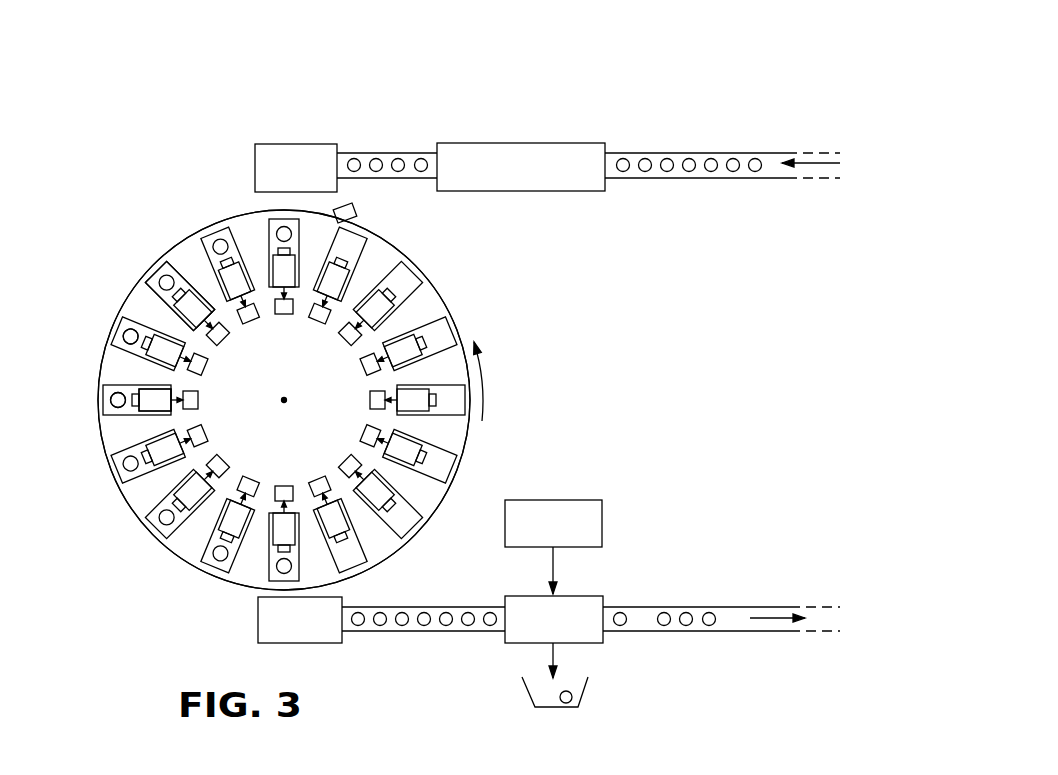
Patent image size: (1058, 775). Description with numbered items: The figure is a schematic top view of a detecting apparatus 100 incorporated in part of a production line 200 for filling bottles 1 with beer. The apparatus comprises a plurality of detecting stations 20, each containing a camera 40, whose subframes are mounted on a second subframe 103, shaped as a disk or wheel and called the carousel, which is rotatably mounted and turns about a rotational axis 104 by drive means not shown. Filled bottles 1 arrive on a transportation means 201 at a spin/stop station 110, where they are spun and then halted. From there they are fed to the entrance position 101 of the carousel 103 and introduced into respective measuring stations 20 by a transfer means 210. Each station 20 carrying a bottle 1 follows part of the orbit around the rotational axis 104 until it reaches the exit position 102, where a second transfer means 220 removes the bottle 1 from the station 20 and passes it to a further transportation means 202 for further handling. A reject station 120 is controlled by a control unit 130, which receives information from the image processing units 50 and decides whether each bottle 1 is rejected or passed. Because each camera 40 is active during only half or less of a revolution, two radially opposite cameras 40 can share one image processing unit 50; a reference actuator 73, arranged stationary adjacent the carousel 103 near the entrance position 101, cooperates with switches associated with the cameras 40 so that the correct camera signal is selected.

The bottle 1 is at (124, 341).
The detecting station 20 is at (146, 519).
The camera 40 is at (150, 411).
The image processing unit 50 is at (142, 283).
The reference actuator 73 is at (356, 213).
The detecting apparatus 100 is at (522, 343).
The entrance position 101 is at (225, 202).
The exit position 102 is at (238, 595).
The second subframe (carousel) 103 is at (429, 280).
The rotational axis 104 is at (287, 397).
The spin/stop station 110 is at (540, 178).
The reject station 120 is at (573, 631).
The control unit 130 is at (573, 536).
The production line 200 is at (722, 75).
The transportation means 201 is at (640, 152).
The transportation means 202 is at (425, 632).
The transfer means 210 is at (313, 180).
The second transfer means 220 is at (320, 632).